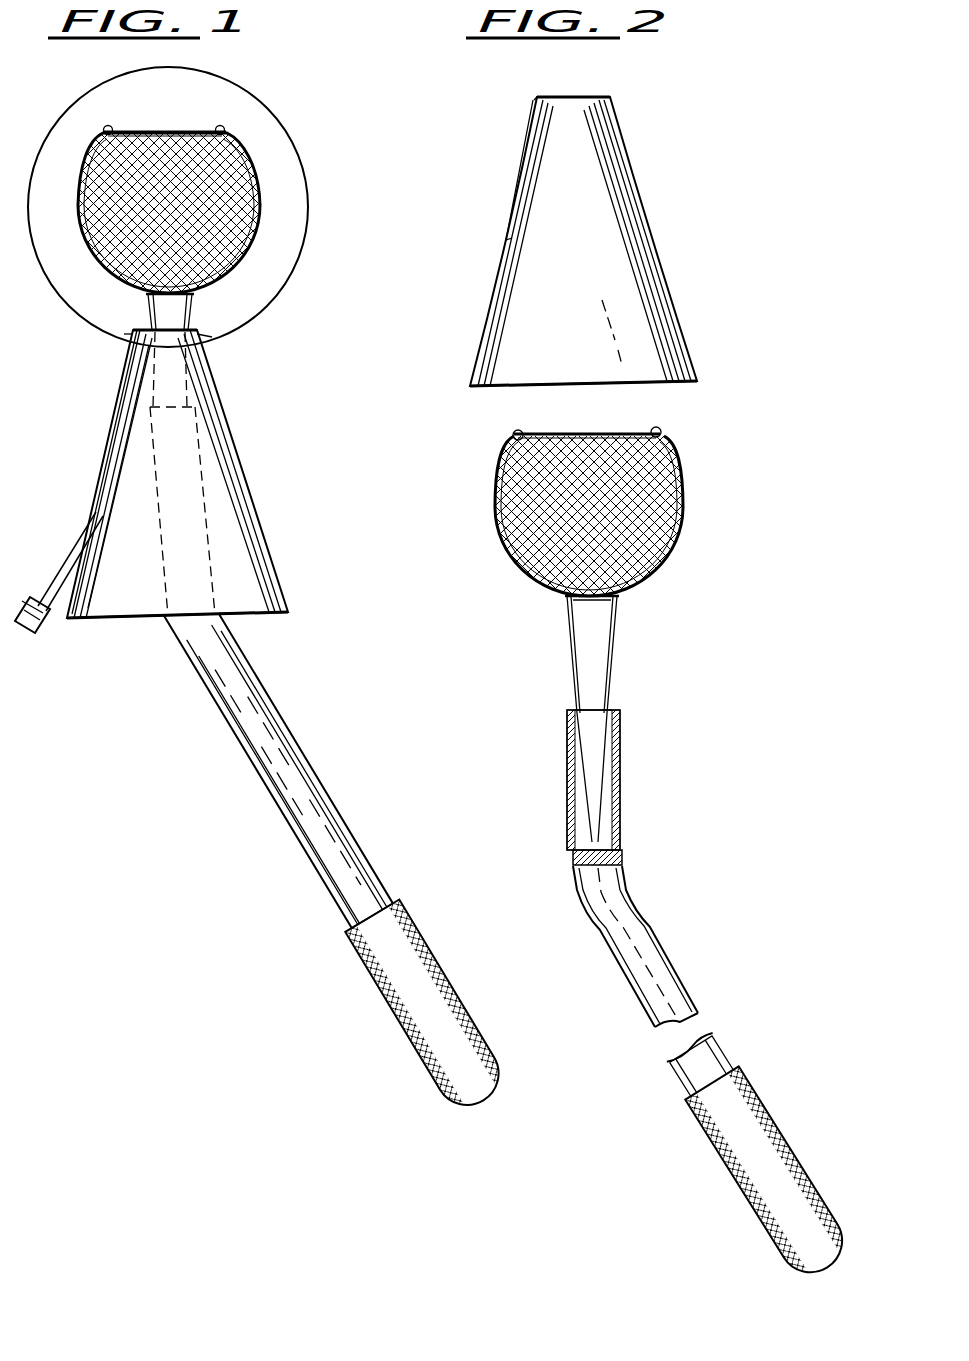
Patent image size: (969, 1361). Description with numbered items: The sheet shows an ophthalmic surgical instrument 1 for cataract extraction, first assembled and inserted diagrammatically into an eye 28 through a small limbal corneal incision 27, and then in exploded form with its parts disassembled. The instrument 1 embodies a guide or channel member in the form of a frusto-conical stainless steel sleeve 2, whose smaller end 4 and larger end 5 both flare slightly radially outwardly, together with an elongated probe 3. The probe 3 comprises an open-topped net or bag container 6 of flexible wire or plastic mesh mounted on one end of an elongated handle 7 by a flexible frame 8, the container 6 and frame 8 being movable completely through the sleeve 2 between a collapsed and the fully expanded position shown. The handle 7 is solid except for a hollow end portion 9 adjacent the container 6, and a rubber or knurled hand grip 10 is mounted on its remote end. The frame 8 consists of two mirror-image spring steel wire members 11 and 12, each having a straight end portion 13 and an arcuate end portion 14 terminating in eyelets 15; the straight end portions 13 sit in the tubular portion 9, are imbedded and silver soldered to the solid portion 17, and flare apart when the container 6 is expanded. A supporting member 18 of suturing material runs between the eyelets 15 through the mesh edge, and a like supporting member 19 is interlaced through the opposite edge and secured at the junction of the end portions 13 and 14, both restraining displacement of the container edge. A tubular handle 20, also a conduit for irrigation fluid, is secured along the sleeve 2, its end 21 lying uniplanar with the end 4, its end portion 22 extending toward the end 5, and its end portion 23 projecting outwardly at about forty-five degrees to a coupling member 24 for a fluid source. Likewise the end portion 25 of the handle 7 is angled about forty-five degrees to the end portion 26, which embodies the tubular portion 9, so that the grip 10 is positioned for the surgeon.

In FIG. 1, the ophthalmic surgical instrument 1 is at (300, 452).
In FIG. 2, the ophthalmic surgical instrument 1 is at (702, 396).
In FIG. 1, the sleeve 2 is at (268, 532).
In FIG. 2, the sleeve 2 is at (636, 186).
In FIG. 1, the probe 3 is at (268, 730).
In FIG. 2, the probe 3 is at (670, 468).
In FIG. 1, the smaller end of the sleeve 4 is at (197, 331).
In FIG. 2, the smaller end of the sleeve 4 is at (597, 97).
In FIG. 1, the larger end of the sleeve 5 is at (117, 620).
In FIG. 2, the larger end of the sleeve 5 is at (515, 388).
In FIG. 1, the container 6 is at (228, 185).
In FIG. 2, the container 6 is at (665, 528).
In FIG. 1, the handle 7 is at (312, 800).
In FIG. 2, the handle 7 is at (622, 915).
In FIG. 1, the flexible frame 8 is at (192, 296).
In FIG. 2, the flexible frame 8 is at (620, 615).
In FIG. 1, the end portion of the handle 9 is at (148, 487).
In FIG. 2, the end portion of the handle 9 is at (621, 790).
In FIG. 1, the hand grip 10 is at (412, 1032).
In FIG. 2, the hand grip 10 is at (770, 1172).
In FIG. 1, the elongated member 11 is at (148, 313).
In FIG. 2, the elongated member 11 is at (568, 620).
In FIG. 1, the elongated member 12 is at (192, 316).
In FIG. 2, the elongated member 12 is at (615, 630).
In FIG. 2, the straight end portion 13 is at (571, 660).
In FIG. 2, the arcuate-shaped end portion 14 is at (682, 488).
In FIG. 2, the eyelets 15 is at (513, 434).
In FIG. 2, the solid portion of the handle 17 is at (622, 858).
In FIG. 1, the supporting member 18 is at (158, 132).
In FIG. 2, the supporting member 18 is at (576, 432).
In FIG. 2, the supporting member 19 is at (588, 601).
In FIG. 1, the handle 20 is at (120, 386).
In FIG. 2, the handle 20 is at (528, 155).
In FIG. 1, the end of the handle 21 is at (130, 326).
In FIG. 2, the end of the handle 21 is at (538, 97).
In FIG. 1, the end portion of the handle 22 is at (110, 448).
In FIG. 1, the end portion of the handle 23 is at (60, 570).
In FIG. 1, the coupling member 24 is at (46, 620).
In FIG. 1, the end portion of the handle 25 is at (368, 892).
In FIG. 2, the end portion of the handle 25 is at (716, 1066).
In FIG. 1, the end portion of the handle 26 is at (195, 446).
In FIG. 2, the end portion of the handle 26 is at (619, 748).
In FIG. 1, the limbal corneal incision 27 is at (205, 338).
In FIG. 1, the eye 28 is at (262, 105).